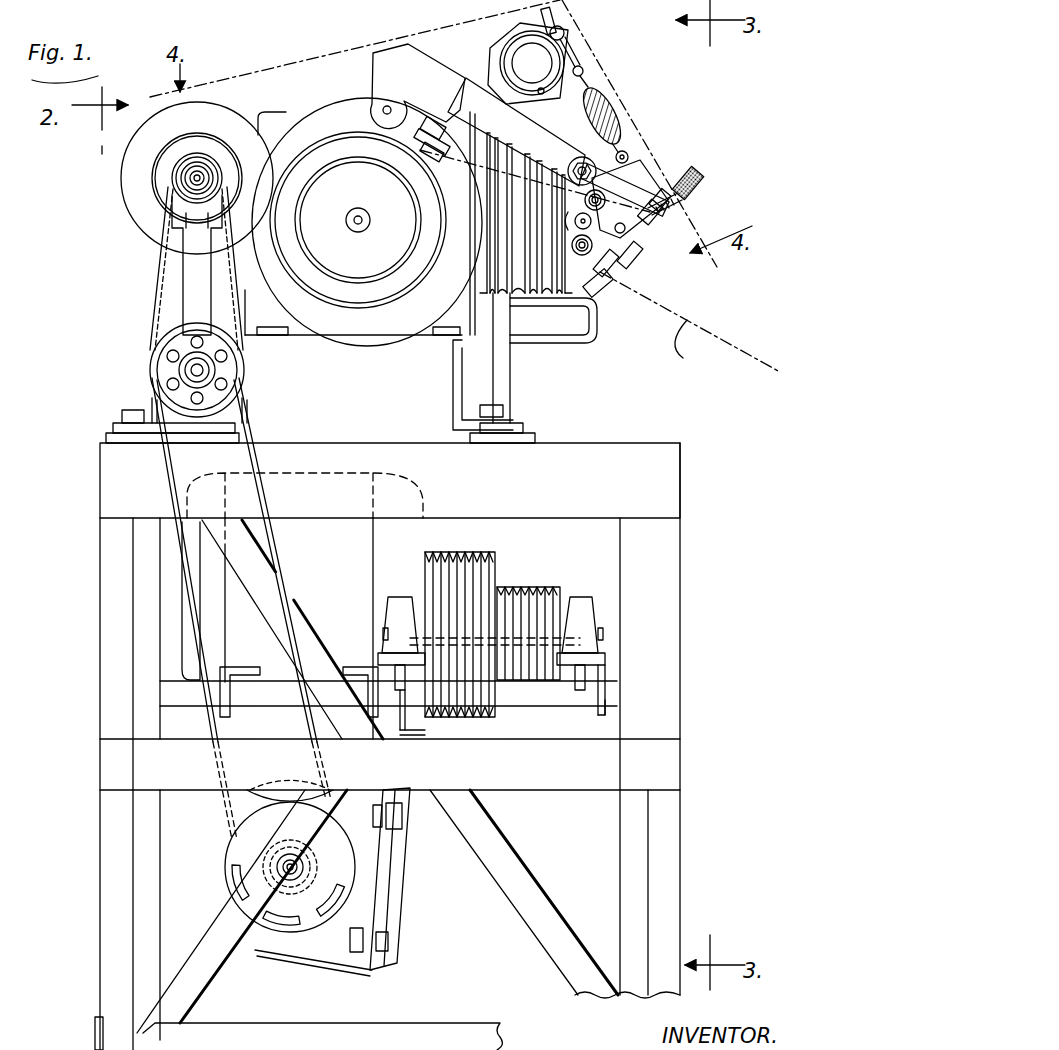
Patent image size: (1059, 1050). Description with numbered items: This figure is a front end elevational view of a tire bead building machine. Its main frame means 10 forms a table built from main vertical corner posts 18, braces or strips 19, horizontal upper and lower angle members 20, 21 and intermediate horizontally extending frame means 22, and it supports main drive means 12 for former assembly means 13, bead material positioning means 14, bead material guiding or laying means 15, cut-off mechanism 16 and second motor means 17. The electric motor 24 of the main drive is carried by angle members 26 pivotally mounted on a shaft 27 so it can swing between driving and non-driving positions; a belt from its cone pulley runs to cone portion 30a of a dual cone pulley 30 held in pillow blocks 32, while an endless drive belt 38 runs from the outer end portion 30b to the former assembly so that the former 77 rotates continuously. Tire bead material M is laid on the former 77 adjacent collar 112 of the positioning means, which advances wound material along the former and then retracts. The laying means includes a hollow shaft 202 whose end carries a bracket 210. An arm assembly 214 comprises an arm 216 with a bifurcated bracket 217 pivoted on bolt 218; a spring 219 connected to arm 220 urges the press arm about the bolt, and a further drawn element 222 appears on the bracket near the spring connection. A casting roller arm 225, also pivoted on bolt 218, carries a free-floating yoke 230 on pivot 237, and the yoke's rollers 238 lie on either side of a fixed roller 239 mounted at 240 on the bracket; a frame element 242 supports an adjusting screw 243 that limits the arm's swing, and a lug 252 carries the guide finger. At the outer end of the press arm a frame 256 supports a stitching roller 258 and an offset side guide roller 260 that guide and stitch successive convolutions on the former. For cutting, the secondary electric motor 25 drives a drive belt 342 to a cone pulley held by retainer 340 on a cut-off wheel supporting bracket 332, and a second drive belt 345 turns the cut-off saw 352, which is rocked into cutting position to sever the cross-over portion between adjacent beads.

The main frame means 10 is at (401, 746).
The main drive means 12 is at (445, 550).
The former assembly means 13 is at (322, 140).
The bead material positioning means 14 is at (333, 100).
The bead material guiding or laying means 15 is at (605, 98).
The cut-off mechanism 16 is at (133, 222).
The second motor means 17 is at (203, 842).
The main vertical corner posts 18 is at (668, 820).
The braces or strips 19 is at (325, 655).
The horizontal upper angle members 20 is at (680, 480).
The horizontal lower angle members 21 is at (447, 1022).
The intermediate horizontally extending frame means 22 is at (412, 736).
The electric motor 24 is at (355, 595).
The electric motor 25 is at (320, 915).
The angle members 26 is at (250, 655).
The shaft 27 is at (605, 700).
The dual cone pulley 30 is at (495, 660).
The cone portion of dual cone pulley 30a is at (468, 735).
The outer end portion of dual cone pulley 30b is at (538, 583).
The pillow blocks 32 is at (402, 600).
The endless drive belt 38 is at (500, 525).
The former 77 is at (412, 290).
The collar 112 is at (384, 332).
The hollow shaft 202 is at (568, 50).
The bracket 210 is at (588, 70).
The arm assembly 214 is at (473, 62).
The arm 216 is at (568, 165).
The bifurcated bracket 217 is at (572, 160).
The bolt 218 is at (605, 135).
The spring 219 is at (628, 148).
The arm of bracket 220 is at (622, 160).
The stud 222 is at (562, 22).
The arm 225 is at (640, 152).
The yoke 230 is at (628, 242).
The pivot 237 is at (660, 218).
The rollers 238 is at (640, 180).
The roller 239 is at (553, 270).
The roller mounting 240 is at (575, 220).
The frame element 242 is at (675, 190).
The adjusting screw 243 is at (700, 195).
The lug 252 is at (602, 300).
The frame 256 is at (418, 73).
The stitching roller 258 is at (365, 118).
The side guide roller 260 is at (440, 158).
The cut-off wheel supporting bracket 332 is at (175, 263).
The retainer 340 is at (170, 369).
The drive belt 342 is at (178, 615).
The second drive belt 345 is at (160, 293).
The cut-off saw 352 is at (128, 180).
The tire bead material M is at (688, 348).